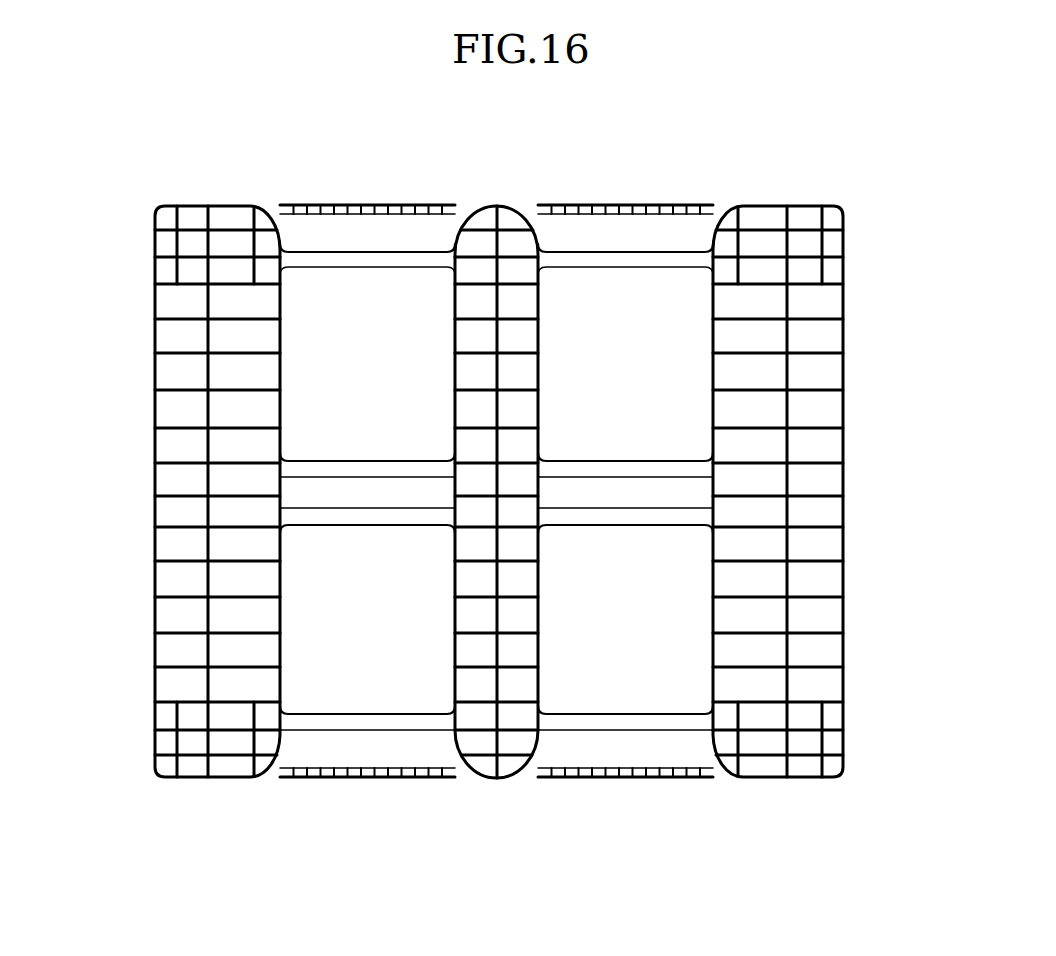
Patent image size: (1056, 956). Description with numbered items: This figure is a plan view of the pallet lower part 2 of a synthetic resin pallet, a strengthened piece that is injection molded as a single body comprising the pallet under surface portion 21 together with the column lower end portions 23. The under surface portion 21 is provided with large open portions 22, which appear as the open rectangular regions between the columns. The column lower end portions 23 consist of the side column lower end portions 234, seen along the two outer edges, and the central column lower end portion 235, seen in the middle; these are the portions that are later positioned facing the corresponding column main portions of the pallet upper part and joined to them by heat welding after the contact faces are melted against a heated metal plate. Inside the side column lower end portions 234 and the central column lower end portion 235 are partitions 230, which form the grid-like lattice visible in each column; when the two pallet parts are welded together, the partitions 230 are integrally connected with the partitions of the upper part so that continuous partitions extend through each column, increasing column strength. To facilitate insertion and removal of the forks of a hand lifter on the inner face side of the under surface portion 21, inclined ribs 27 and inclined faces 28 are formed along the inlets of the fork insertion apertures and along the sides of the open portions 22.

The pallet lower part 2 is at (522, 505).
The under surface portion 21 is at (641, 239).
The open portions 22 is at (668, 378).
The column lower end portions 23 is at (581, 509).
The inclined ribs 27 is at (563, 207).
The inclined faces 28 is at (340, 472).
The partitions 230 is at (245, 390).
The side column lower end portions 234 is at (848, 401).
The central column lower end portion 235 is at (455, 540).